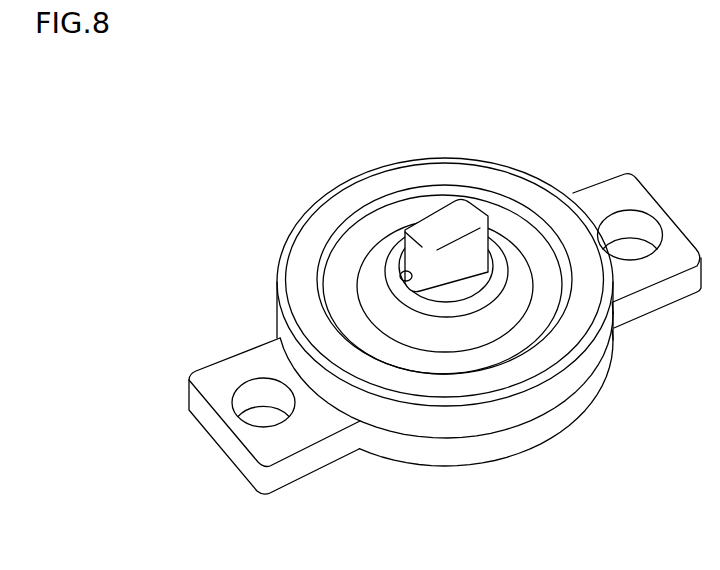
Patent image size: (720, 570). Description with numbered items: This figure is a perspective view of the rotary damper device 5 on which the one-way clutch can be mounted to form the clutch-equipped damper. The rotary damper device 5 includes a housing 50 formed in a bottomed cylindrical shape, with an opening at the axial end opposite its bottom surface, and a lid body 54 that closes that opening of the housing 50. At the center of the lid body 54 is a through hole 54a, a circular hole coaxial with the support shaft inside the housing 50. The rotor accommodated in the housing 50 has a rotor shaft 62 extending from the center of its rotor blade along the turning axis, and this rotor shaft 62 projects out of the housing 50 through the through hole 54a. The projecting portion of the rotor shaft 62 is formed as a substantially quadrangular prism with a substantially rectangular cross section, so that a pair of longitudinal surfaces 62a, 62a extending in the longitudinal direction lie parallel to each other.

The rotary damper device 5 is at (282, 167).
The housing 50 is at (468, 453).
The lid body 54 is at (568, 338).
The through hole 54a is at (403, 273).
The rotor shaft 62 is at (487, 210).
The longitudinal surfaces 62a is at (428, 211).